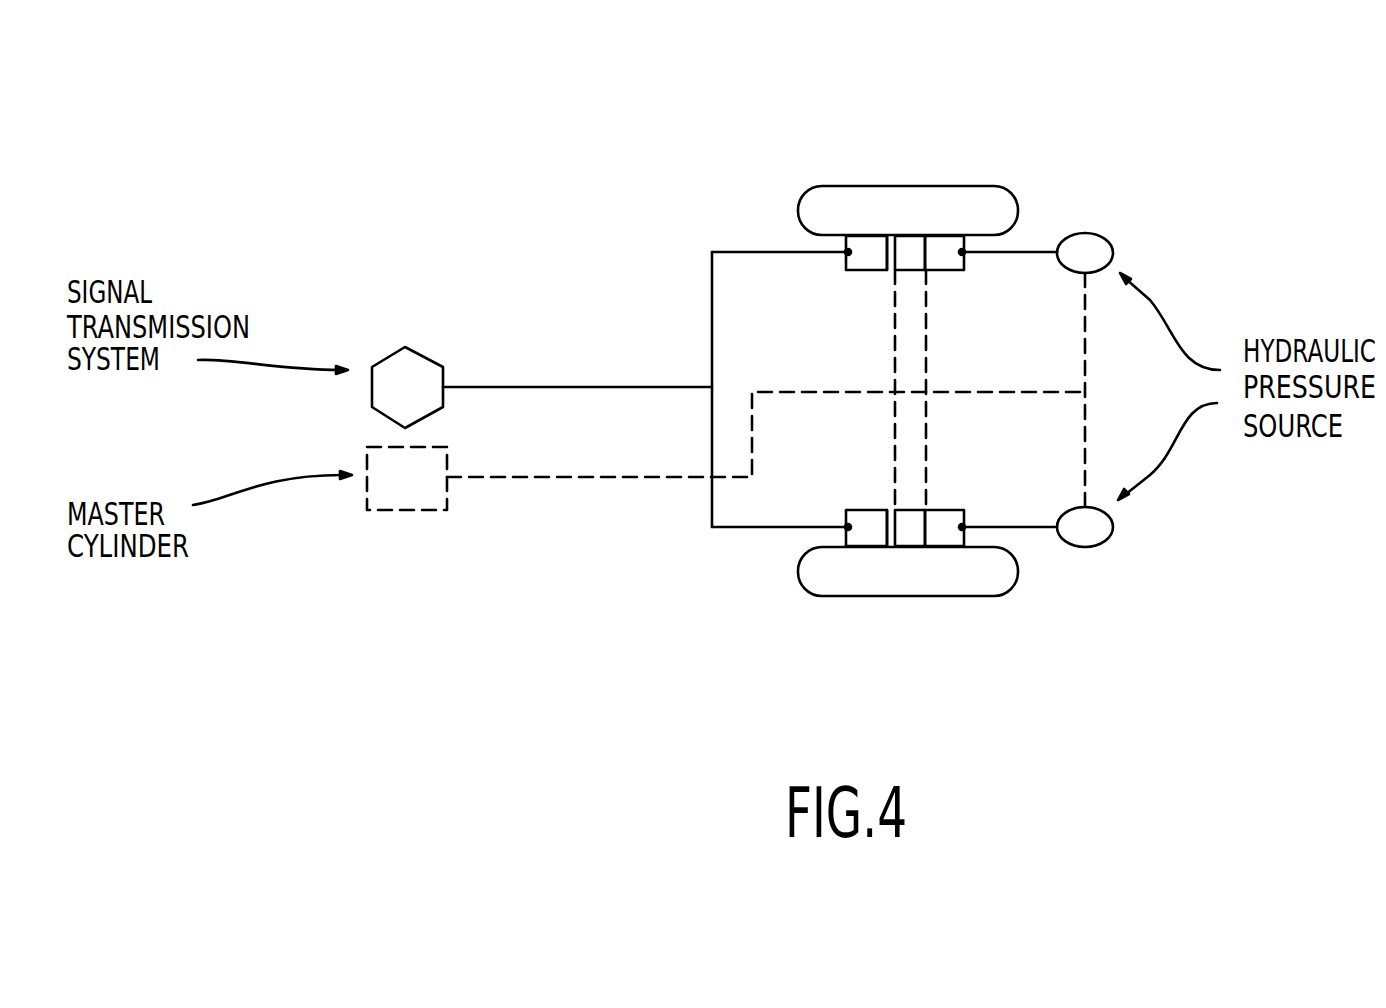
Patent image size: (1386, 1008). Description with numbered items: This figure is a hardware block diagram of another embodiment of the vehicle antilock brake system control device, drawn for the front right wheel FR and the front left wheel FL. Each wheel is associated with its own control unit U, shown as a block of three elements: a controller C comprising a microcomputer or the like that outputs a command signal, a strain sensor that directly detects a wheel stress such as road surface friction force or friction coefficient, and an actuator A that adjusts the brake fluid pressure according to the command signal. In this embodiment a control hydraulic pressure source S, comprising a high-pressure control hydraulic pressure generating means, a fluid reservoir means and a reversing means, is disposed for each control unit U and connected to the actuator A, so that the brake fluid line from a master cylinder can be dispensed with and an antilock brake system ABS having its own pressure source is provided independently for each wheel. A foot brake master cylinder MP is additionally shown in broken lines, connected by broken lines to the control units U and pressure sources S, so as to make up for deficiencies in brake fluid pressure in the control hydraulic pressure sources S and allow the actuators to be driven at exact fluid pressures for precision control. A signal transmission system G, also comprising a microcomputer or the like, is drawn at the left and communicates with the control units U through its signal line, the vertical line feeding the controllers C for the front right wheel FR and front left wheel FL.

The signal transmission system G is at (405, 347).
The master cylinder MP is at (407, 478).
The front right wheel FR is at (913, 187).
The front left wheel FL is at (912, 595).
The antilock brake system ABS is at (951, 392).
The control unit U is at (901, 392).
The controller C is at (866, 392).
The actuator A is at (963, 283).
The control hydraulic pressure source S is at (1097, 232).